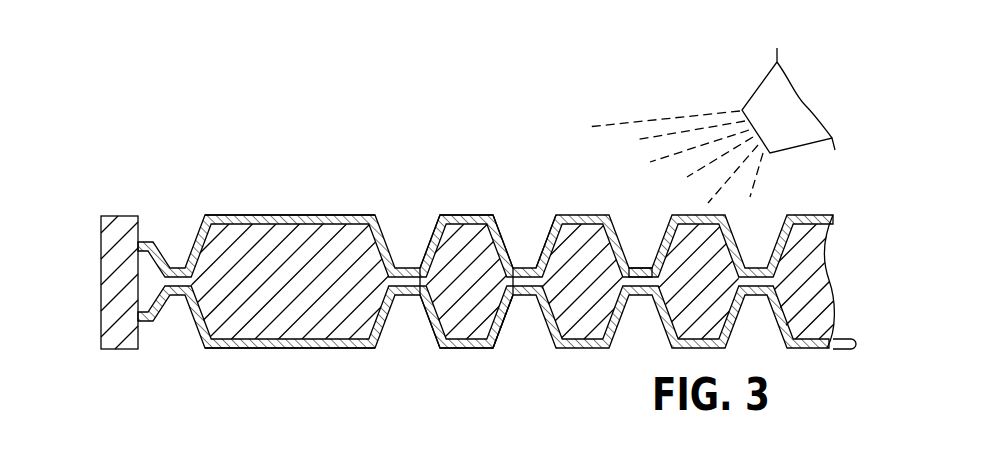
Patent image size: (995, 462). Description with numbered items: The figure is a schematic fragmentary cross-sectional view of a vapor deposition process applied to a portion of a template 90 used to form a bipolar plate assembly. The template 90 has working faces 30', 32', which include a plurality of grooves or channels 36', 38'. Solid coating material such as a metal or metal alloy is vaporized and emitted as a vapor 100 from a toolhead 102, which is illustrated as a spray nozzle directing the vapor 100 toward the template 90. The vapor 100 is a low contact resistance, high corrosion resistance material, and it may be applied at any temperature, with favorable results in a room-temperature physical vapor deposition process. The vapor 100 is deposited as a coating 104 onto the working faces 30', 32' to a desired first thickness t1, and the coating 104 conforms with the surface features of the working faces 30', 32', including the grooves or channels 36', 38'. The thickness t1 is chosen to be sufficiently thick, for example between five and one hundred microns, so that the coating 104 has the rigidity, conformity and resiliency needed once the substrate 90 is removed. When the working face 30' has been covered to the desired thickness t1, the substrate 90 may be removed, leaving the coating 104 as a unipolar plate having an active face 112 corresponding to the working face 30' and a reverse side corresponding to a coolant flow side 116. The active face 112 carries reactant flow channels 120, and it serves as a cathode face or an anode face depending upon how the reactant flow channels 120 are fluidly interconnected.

The vapor 100 is at (662, 135).
The toolhead 102 is at (798, 127).
The coating 104 is at (465, 212).
The active face 112 is at (797, 213).
The coolant flow side 116 is at (790, 229).
The reactant flow channels 120 is at (658, 238).
The template 90 is at (838, 311).
The working face 30' is at (290, 189).
The working face 32' is at (290, 365).
The grooves or channels 36' is at (531, 212).
The grooves or channels 38' is at (504, 350).
The first thickness t1 is at (856, 344).